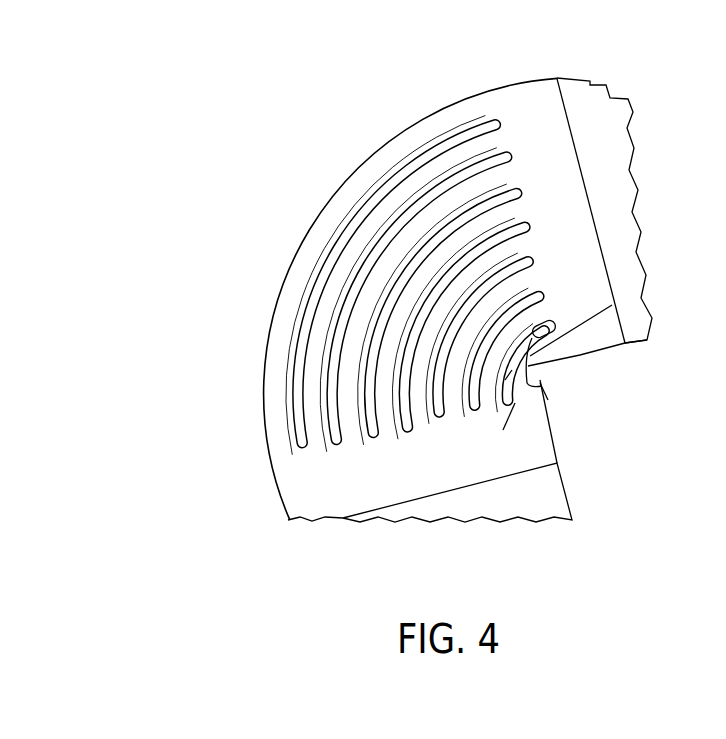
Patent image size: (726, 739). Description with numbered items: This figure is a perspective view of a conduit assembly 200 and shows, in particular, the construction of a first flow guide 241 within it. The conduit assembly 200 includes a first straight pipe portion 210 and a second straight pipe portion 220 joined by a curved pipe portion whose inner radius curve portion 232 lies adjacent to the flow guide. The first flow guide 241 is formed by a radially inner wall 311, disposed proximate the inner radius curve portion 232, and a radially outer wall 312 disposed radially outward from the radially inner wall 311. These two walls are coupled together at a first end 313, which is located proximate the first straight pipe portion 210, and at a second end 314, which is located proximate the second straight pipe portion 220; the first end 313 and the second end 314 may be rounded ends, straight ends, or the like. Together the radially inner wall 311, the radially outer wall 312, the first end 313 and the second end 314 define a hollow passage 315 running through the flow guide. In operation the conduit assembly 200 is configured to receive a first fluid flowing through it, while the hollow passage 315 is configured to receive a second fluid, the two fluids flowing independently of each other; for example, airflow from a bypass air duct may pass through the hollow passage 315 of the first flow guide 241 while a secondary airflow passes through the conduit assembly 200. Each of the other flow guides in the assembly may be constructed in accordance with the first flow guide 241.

The conduit assembly 200 is at (232, 108).
The first straight pipe portion 210 is at (550, 505).
The second straight pipe portion 220 is at (620, 193).
The inner radius curve portion 232 is at (546, 372).
The first flow guide 241 is at (536, 316).
The radially inner wall 311 is at (548, 366).
The radially outer wall 312 is at (540, 383).
The first end 313 is at (515, 403).
The second end 314 is at (614, 305).
The hollow passage 315 is at (512, 370).